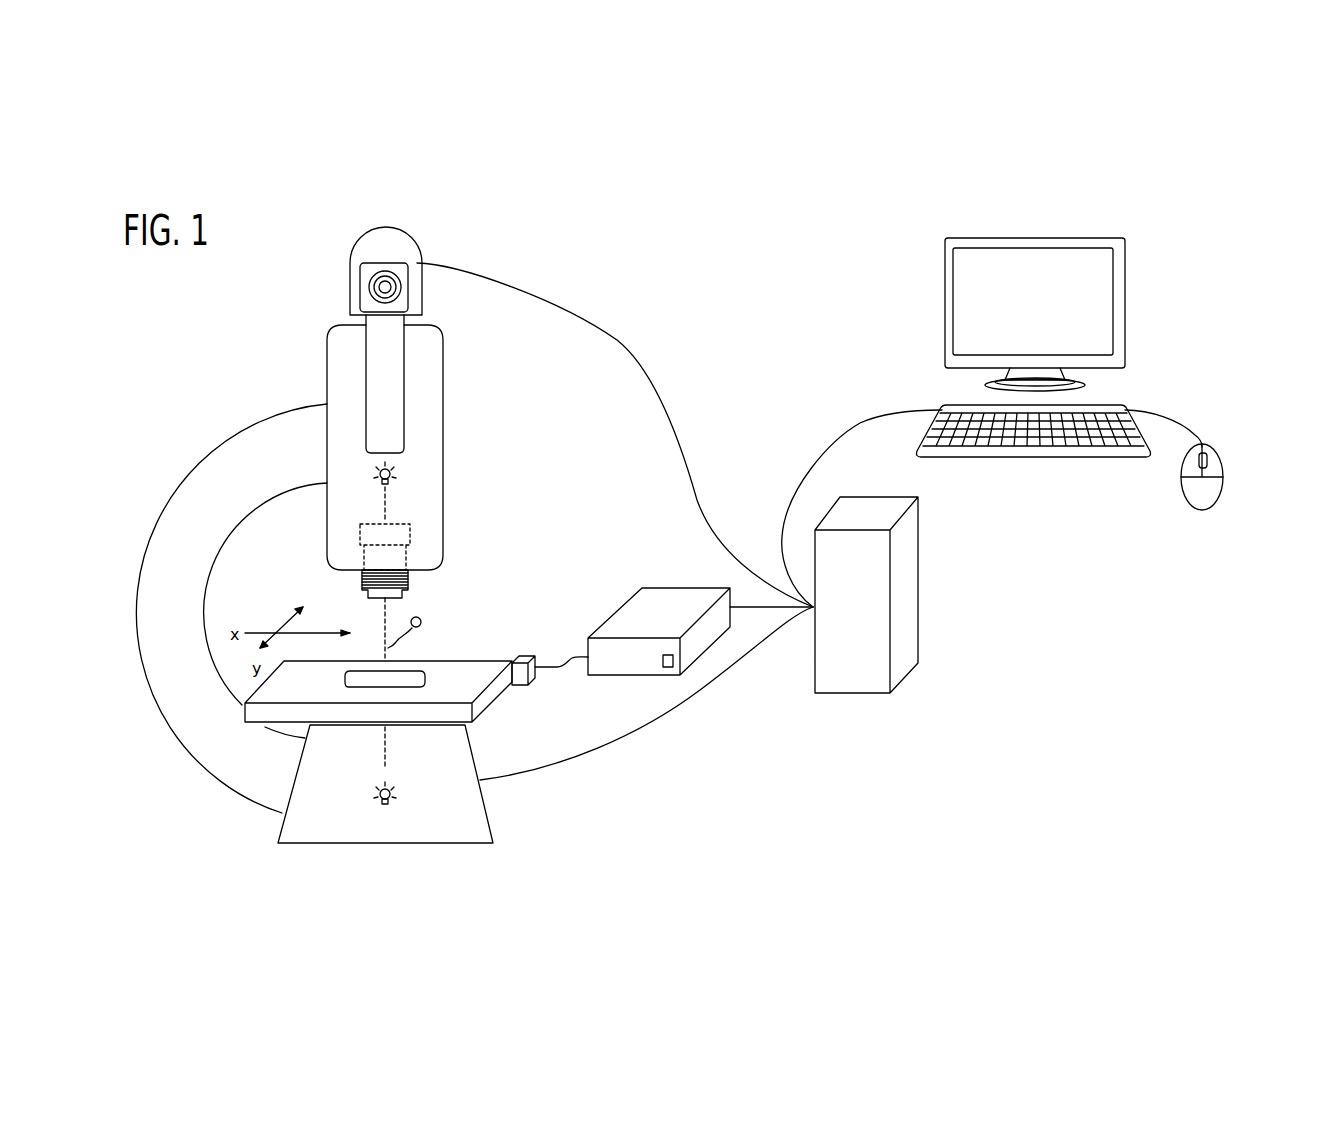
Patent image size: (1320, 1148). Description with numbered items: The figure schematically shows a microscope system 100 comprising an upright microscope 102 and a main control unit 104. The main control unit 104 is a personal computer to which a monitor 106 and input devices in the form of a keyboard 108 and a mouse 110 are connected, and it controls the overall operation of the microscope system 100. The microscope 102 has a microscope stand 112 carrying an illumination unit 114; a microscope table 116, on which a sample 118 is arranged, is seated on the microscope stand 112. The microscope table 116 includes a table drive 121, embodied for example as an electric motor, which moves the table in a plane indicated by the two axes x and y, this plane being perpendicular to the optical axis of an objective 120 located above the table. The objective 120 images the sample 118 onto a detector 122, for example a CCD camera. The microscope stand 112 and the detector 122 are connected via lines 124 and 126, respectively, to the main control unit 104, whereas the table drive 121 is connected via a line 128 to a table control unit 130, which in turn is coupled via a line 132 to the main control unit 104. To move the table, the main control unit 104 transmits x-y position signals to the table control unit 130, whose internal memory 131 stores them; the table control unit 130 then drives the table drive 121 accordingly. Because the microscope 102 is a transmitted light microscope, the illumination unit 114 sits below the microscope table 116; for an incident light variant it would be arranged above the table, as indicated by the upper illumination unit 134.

The microscope system 100 is at (800, 217).
The upright microscope 102 is at (207, 446).
The main control unit 104 is at (920, 637).
The monitor 106 is at (1060, 237).
The keyboard 108 is at (960, 403).
The mouse 110 is at (1223, 483).
The microscope stand 112 is at (465, 843).
The illumination unit 114 is at (393, 805).
The microscope table 116 is at (477, 655).
The sample 118 is at (427, 677).
The objective 120 is at (408, 578).
The table drive 121 is at (520, 655).
The detector 122 is at (421, 300).
The line 124 is at (657, 722).
The line 126 is at (618, 340).
The line 128 is at (557, 667).
The table control unit 130 is at (617, 600).
The internal memory 131 is at (663, 661).
The line 132 is at (750, 603).
The illumination unit above the table 134 is at (397, 463).